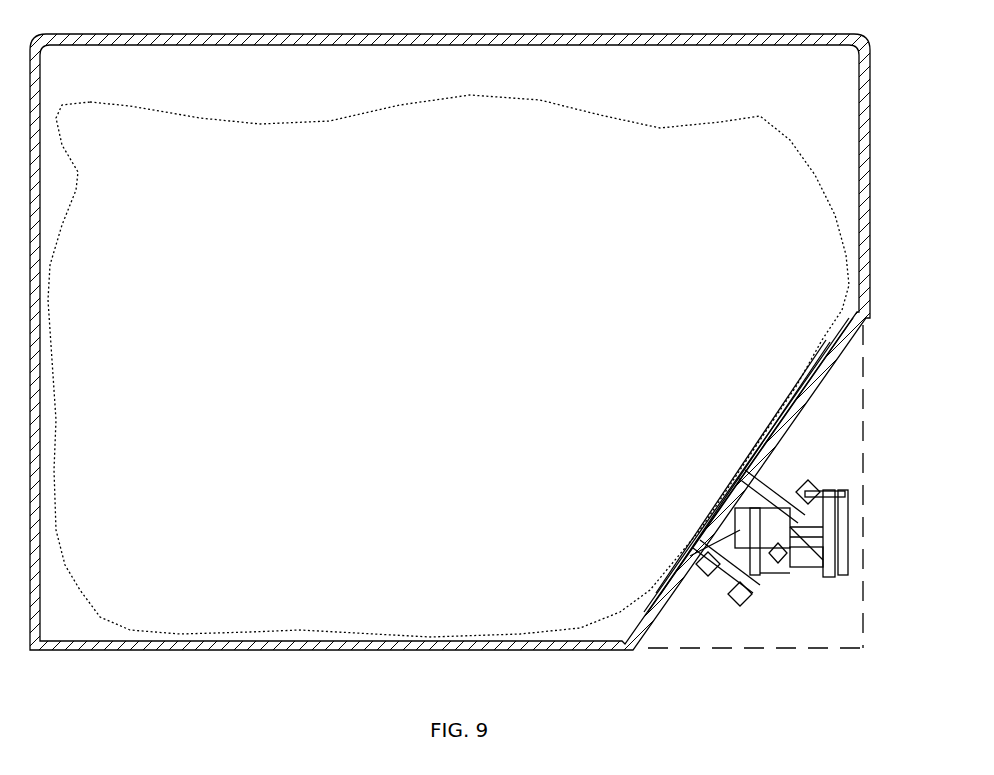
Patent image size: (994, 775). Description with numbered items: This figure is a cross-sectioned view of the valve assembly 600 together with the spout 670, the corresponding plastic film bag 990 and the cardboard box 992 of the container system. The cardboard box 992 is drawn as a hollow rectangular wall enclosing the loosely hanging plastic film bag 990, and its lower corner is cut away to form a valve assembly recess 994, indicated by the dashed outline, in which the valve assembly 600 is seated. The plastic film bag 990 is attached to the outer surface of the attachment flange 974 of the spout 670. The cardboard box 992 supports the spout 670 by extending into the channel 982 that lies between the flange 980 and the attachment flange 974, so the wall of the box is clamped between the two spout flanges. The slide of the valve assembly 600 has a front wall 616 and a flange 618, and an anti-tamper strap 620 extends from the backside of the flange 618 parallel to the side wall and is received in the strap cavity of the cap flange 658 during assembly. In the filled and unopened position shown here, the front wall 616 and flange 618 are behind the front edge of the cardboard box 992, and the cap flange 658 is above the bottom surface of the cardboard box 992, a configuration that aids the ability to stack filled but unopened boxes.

The cardboard box 992 is at (857, 117).
The valve assembly recess 994 is at (864, 368).
The plastic film bag 990 is at (797, 385).
The spout 670 is at (690, 482).
The attachment flange 974 is at (767, 428).
The channel 982 is at (802, 432).
The anti-tamper strap 620 is at (830, 490).
The front wall 616 is at (848, 537).
The valve assembly 600 is at (927, 582).
The flange 618 is at (847, 577).
The cap flange 658 is at (749, 589).
The flange 980 is at (712, 578).